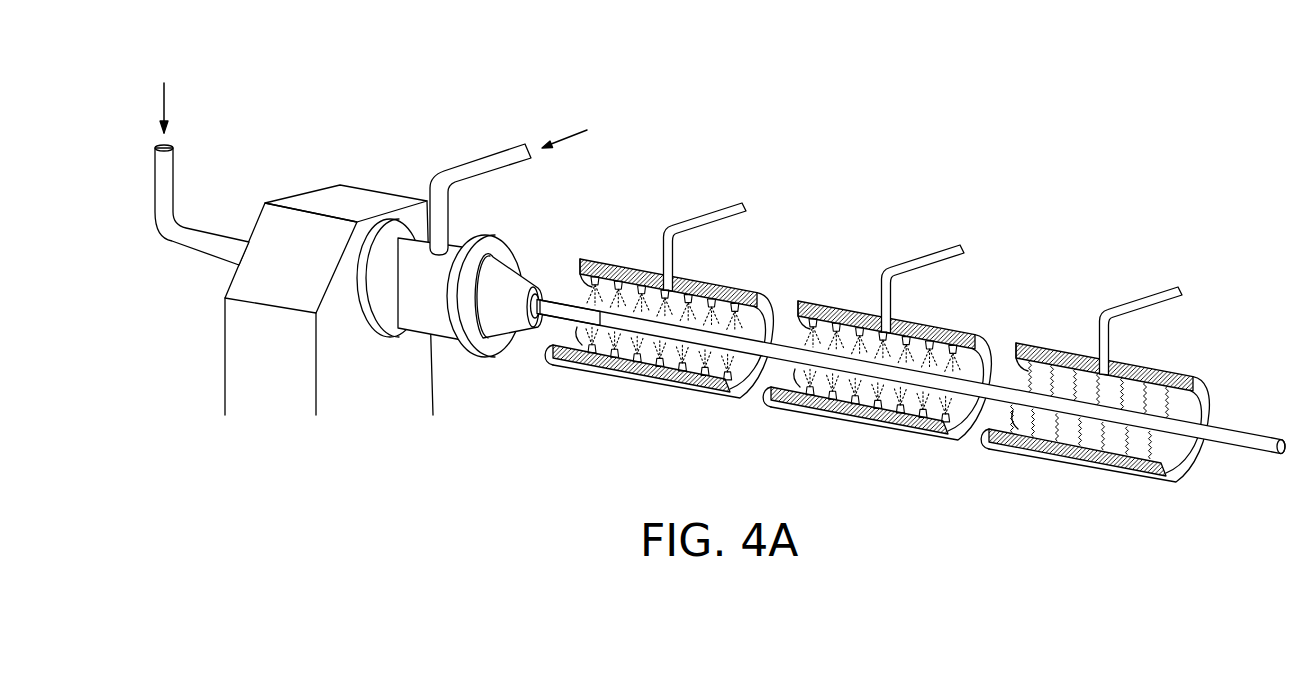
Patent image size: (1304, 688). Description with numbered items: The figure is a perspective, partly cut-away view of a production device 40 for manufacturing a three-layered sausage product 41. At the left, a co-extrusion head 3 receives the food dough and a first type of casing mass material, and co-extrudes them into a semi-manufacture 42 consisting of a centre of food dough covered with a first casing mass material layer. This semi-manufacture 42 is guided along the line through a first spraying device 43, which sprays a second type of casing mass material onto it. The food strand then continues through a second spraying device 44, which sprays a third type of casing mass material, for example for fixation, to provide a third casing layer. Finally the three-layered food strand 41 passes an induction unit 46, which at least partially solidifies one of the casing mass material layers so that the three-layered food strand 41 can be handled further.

The co-extrusion head 3 is at (522, 242).
The production device 40 is at (720, 319).
The three-layered sausage product 41 is at (1253, 447).
The semi-manufacture 42 is at (560, 313).
The first spraying device 43 is at (750, 280).
The second spraying device 44 is at (968, 322).
The induction unit 46 is at (1187, 365).